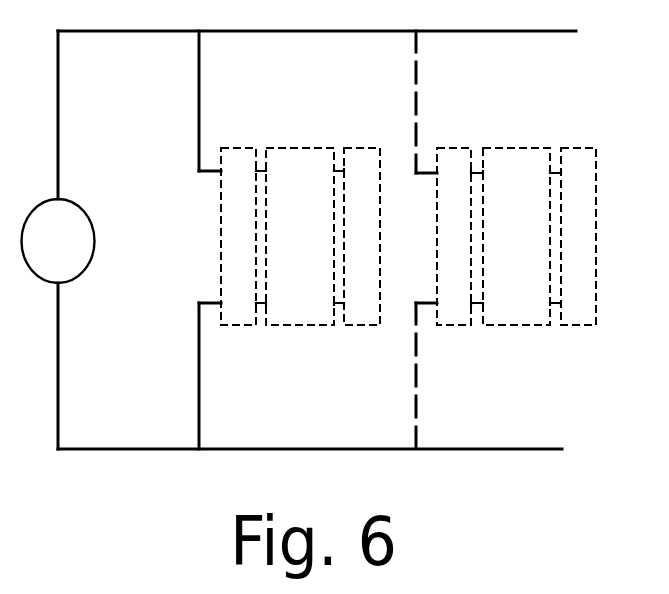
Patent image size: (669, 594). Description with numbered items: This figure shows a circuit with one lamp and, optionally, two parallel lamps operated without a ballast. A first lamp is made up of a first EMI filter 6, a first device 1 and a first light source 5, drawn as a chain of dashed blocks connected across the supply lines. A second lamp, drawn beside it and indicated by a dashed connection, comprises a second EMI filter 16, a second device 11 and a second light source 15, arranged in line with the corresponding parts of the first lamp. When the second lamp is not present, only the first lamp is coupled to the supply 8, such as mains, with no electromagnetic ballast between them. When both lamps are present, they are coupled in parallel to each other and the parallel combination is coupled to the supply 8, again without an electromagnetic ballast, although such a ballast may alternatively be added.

The supply 8 is at (95, 241).
The first EMI filter 6 is at (235, 325).
The first device 1 is at (300, 325).
The first light source 5 is at (360, 325).
The second EMI filter 16 is at (453, 325).
The second device 11 is at (518, 325).
The second light source 15 is at (577, 325).